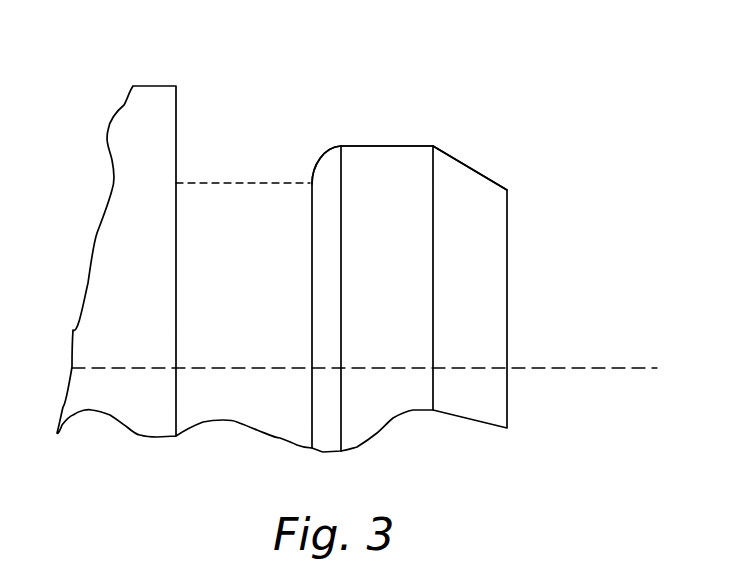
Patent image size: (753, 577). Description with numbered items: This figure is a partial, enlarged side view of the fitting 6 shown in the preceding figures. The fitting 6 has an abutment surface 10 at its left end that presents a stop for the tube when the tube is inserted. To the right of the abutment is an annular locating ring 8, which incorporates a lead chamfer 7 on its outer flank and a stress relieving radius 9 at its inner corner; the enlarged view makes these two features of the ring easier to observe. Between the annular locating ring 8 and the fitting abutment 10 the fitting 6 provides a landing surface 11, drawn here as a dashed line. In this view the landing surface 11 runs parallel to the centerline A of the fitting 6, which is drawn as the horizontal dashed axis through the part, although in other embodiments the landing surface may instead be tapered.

The fitting 6 is at (398, 306).
The lead chamfer 7 is at (479, 170).
The annular locating ring 8 is at (393, 146).
The stress relieving radius 9 is at (328, 145).
The abutment surface 10 is at (152, 83).
The landing surface 11 is at (245, 183).
The centerline A is at (590, 368).